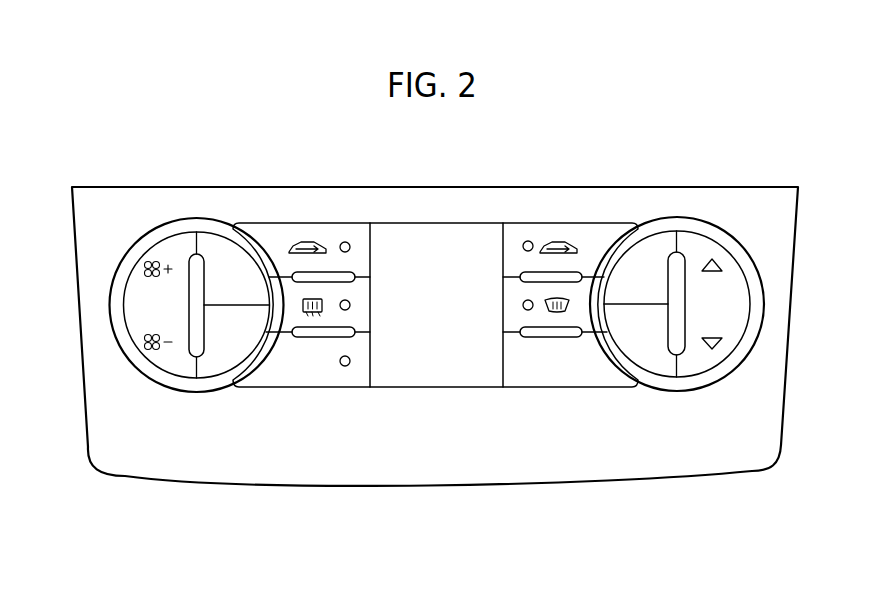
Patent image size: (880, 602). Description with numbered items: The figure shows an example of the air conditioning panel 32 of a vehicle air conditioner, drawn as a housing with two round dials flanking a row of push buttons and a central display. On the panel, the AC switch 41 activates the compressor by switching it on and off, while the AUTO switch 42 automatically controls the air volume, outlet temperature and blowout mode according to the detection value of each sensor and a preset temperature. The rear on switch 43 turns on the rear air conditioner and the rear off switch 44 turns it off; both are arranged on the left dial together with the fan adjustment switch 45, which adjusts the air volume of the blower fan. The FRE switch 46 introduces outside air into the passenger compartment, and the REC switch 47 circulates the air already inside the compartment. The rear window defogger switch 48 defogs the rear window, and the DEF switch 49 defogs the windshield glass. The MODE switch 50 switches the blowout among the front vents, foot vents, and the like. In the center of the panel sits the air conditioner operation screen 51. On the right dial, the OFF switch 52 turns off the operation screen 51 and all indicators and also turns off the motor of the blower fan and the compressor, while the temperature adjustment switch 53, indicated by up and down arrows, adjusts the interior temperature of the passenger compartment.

The air conditioning panel 32 is at (152, 487).
The AC switch 41 is at (351, 341).
The AUTO switch 42 is at (659, 252).
The rear on switch 43 is at (216, 252).
The rear off switch 44 is at (213, 363).
The fan adjustment switch 45 is at (160, 302).
The FRE switch 46 is at (328, 236).
The REC switch 47 is at (583, 234).
The rear window defogger switch 48 is at (357, 284).
The DEF switch 49 is at (508, 317).
The MODE switch 50 is at (519, 342).
The air conditioner operation screen 51 is at (422, 387).
The OFF switch 52 is at (652, 372).
The temperature adjustment switch 53 is at (719, 305).